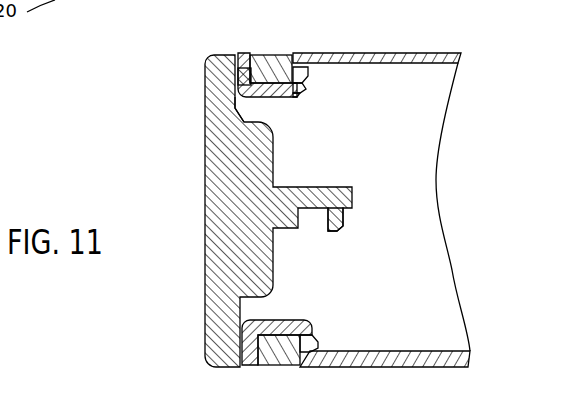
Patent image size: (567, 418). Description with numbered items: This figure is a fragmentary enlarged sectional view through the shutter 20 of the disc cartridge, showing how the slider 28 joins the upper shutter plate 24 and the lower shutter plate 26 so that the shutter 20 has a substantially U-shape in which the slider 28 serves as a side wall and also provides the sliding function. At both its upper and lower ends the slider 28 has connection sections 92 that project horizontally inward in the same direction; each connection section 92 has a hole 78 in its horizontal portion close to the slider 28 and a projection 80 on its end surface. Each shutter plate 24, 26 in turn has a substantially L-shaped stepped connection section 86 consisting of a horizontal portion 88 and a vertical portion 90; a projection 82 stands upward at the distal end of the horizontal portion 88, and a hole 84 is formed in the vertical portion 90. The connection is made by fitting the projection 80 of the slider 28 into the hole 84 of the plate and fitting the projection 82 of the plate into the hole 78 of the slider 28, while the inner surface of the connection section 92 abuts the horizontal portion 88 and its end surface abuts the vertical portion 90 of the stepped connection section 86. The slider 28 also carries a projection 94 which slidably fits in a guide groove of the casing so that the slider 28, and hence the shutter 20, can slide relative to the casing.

The shutter 20 is at (178, 61).
The upper shutter plate 24 is at (382, 53).
The lower shutter plate 26 is at (408, 362).
The slider 28 is at (214, 227).
The hole 78 is at (247, 57).
The projection 80 is at (299, 76).
The projection 82 is at (241, 68).
The hole 84 is at (301, 85).
The stepped connection section 86 is at (233, 107).
The horizontal portion 88 is at (282, 97).
The vertical portion 90 is at (298, 92).
The connection section 92 is at (275, 62).
The projection 94 is at (339, 219).